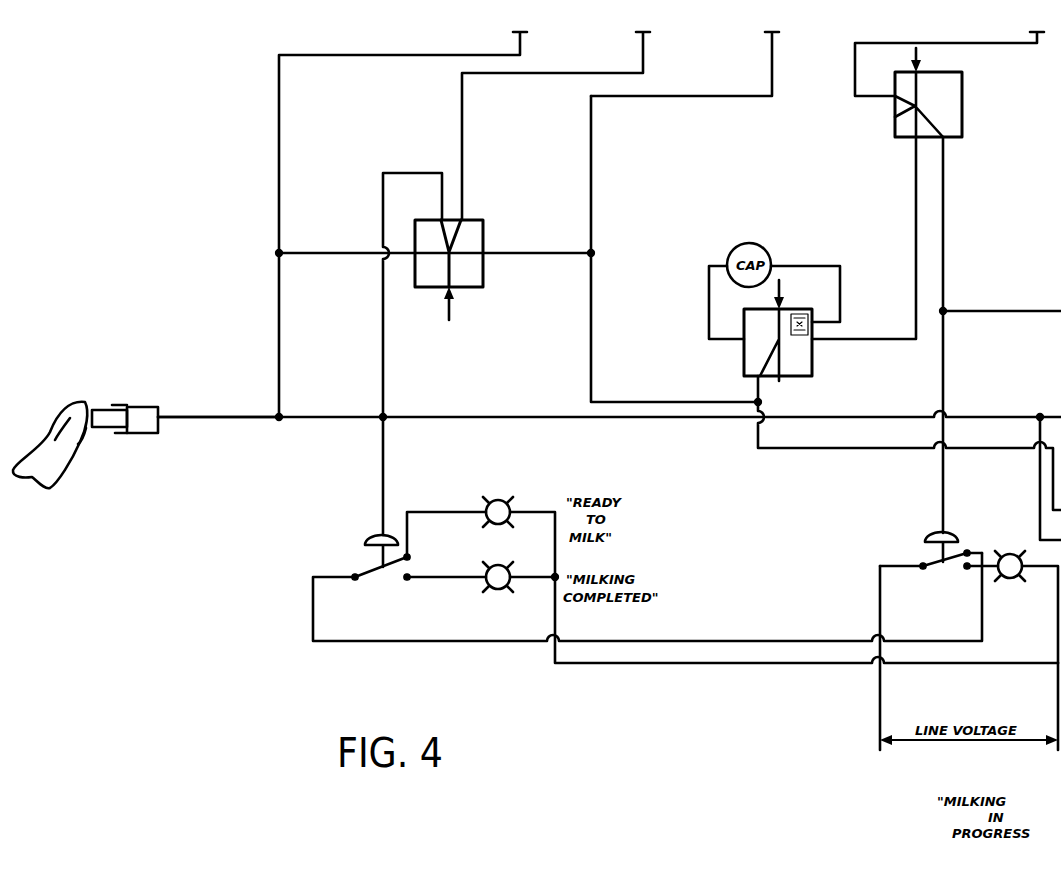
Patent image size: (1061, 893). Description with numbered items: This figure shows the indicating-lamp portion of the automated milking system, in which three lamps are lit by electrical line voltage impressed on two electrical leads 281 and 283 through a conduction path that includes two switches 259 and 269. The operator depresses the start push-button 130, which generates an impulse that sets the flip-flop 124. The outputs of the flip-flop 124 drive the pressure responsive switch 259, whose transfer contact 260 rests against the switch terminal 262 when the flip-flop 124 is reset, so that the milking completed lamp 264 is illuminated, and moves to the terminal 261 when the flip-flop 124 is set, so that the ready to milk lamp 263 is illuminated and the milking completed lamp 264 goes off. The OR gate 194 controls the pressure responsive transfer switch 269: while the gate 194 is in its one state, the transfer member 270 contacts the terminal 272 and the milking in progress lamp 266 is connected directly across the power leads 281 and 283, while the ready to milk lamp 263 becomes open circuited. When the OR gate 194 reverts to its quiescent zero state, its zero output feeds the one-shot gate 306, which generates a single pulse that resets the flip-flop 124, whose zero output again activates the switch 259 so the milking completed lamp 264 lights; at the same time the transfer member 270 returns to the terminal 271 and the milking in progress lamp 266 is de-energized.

The start push-button 130 is at (150, 407).
The flip-flop 124 is at (486, 222).
The OR gate 194 is at (963, 115).
The one-shot gate 306 is at (814, 357).
The pressure responsive switch 259 is at (368, 542).
The transfer contact 260 is at (382, 568).
The switch terminal 261 is at (411, 557).
The switch terminal 262 is at (409, 580).
The ready to milk lamp 263 is at (509, 499).
The milking completed lamp 264 is at (484, 591).
The pressure responsive transfer switch 269 is at (930, 536).
The transfer member 270 is at (942, 563).
The terminal 271 is at (968, 552).
The terminal 272 is at (967, 571).
The milking in progress lamp 266 is at (1040, 802).
The electrical lead 281 is at (881, 718).
The electrical lead 283 is at (1058, 711).